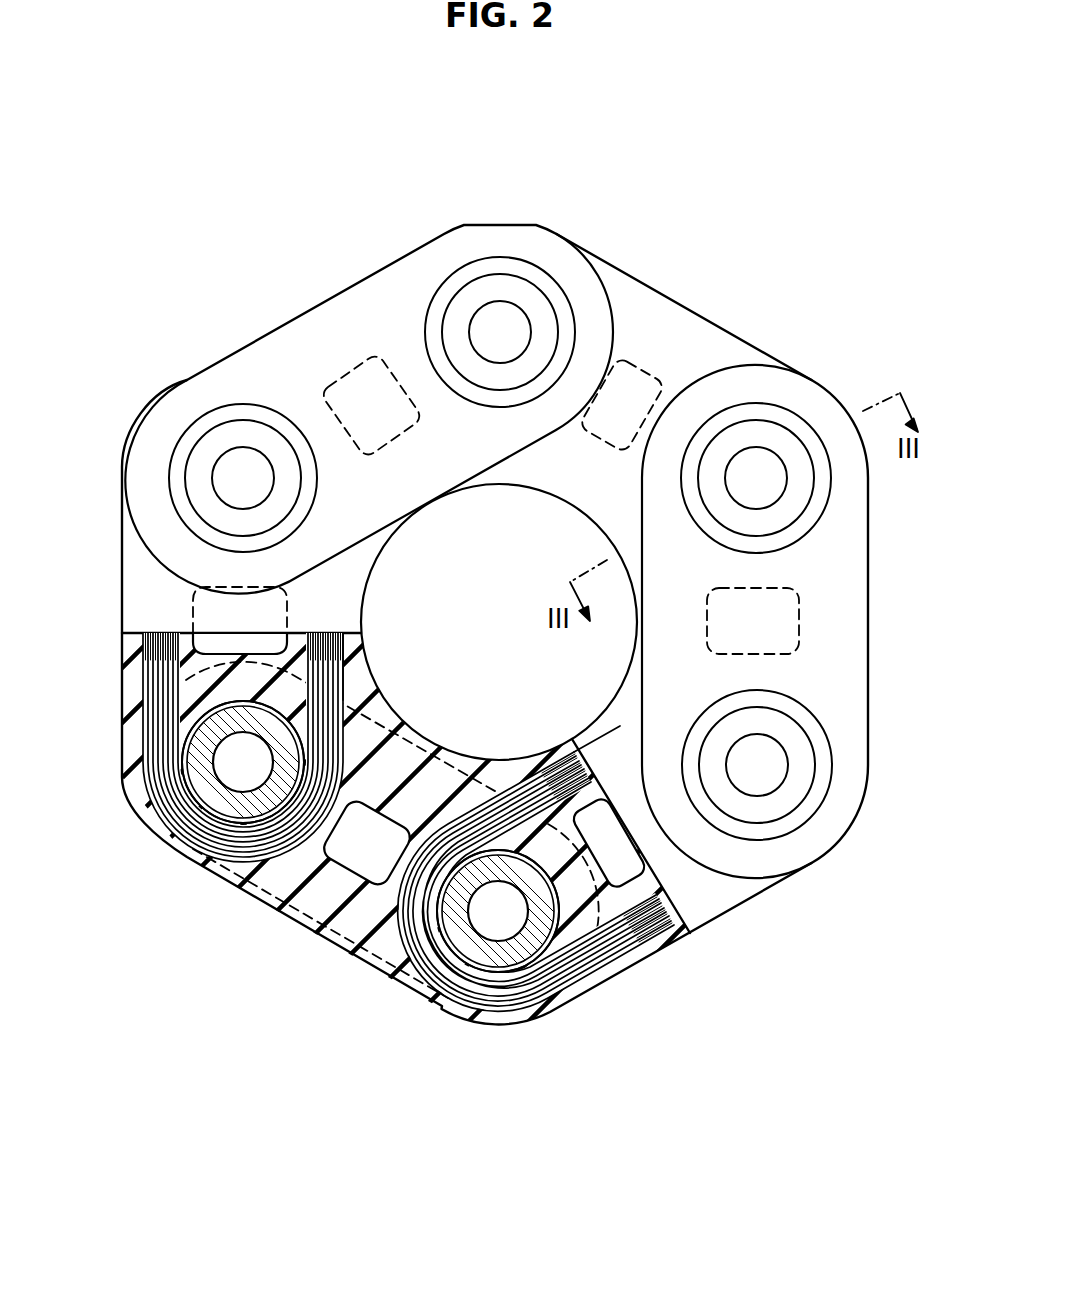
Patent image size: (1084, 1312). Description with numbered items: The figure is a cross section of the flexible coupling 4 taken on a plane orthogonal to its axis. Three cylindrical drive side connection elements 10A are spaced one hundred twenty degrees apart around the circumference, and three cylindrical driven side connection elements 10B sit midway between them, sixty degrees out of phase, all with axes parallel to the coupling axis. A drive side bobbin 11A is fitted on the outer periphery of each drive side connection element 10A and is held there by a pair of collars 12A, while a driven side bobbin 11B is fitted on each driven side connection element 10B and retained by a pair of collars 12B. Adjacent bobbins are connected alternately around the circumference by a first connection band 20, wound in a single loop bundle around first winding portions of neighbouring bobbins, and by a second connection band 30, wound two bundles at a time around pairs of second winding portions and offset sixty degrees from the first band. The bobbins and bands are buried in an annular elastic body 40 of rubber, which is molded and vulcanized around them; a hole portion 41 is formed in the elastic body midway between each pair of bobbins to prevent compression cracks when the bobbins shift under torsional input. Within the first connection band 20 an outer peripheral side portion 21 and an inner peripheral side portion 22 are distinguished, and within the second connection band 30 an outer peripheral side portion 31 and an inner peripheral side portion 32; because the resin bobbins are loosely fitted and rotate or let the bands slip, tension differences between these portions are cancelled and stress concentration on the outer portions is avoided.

The flexible coupling 4 is at (705, 248).
The drive side connection element 10A is at (208, 453).
The driven side connection element 10B is at (512, 290).
The drive side bobbin 11A is at (560, 917).
The driven side bobbin 11B is at (241, 822).
The collar 12A is at (220, 413).
The collar 12B is at (473, 270).
The first connection band 20 is at (148, 733).
The outer peripheral side portion 21 is at (152, 680).
The inner peripheral side portion 22 is at (340, 687).
The second connection band 30 is at (347, 960).
The outer peripheral side portion 31 is at (307, 905).
The inner peripheral side portion 32 is at (405, 778).
The annular elastic body 40 is at (553, 1028).
The hole portion 41 is at (360, 378).